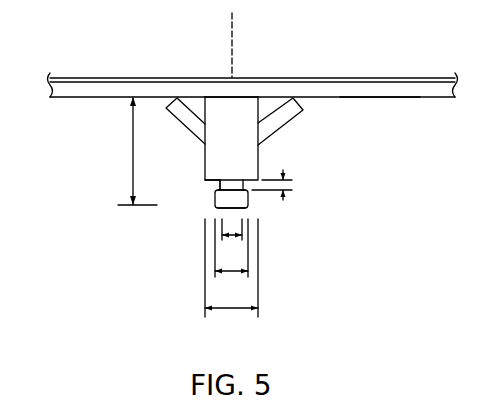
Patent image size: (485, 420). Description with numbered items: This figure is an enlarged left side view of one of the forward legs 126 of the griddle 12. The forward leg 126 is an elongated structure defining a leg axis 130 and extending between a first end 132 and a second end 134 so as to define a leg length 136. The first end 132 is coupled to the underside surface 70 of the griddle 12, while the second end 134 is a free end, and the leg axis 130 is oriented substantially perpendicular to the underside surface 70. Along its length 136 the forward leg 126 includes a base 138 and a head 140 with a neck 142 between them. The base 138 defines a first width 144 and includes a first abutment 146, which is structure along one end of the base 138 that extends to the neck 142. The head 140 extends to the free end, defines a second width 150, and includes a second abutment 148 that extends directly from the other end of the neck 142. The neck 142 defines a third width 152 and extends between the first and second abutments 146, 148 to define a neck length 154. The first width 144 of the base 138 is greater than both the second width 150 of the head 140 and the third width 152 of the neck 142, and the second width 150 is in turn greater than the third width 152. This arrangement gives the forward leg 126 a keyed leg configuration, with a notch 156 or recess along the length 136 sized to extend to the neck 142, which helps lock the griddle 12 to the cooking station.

The griddle 12 is at (413, 100).
The underside surface 70 is at (373, 98).
The forward leg 126 is at (362, 204).
The leg axis 130 is at (232, 28).
The first end 132 is at (242, 102).
The second end 134 is at (243, 209).
The leg length 136 is at (132, 147).
The base 138 is at (246, 121).
The head 140 is at (213, 208).
The neck 142 is at (231, 183).
The first width 144 is at (233, 311).
The first abutment 146 is at (207, 183).
The second abutment 148 is at (250, 191).
The second width 150 is at (233, 273).
The third width 152 is at (233, 240).
The neck length 154 is at (283, 172).
The notch 156 is at (205, 189).